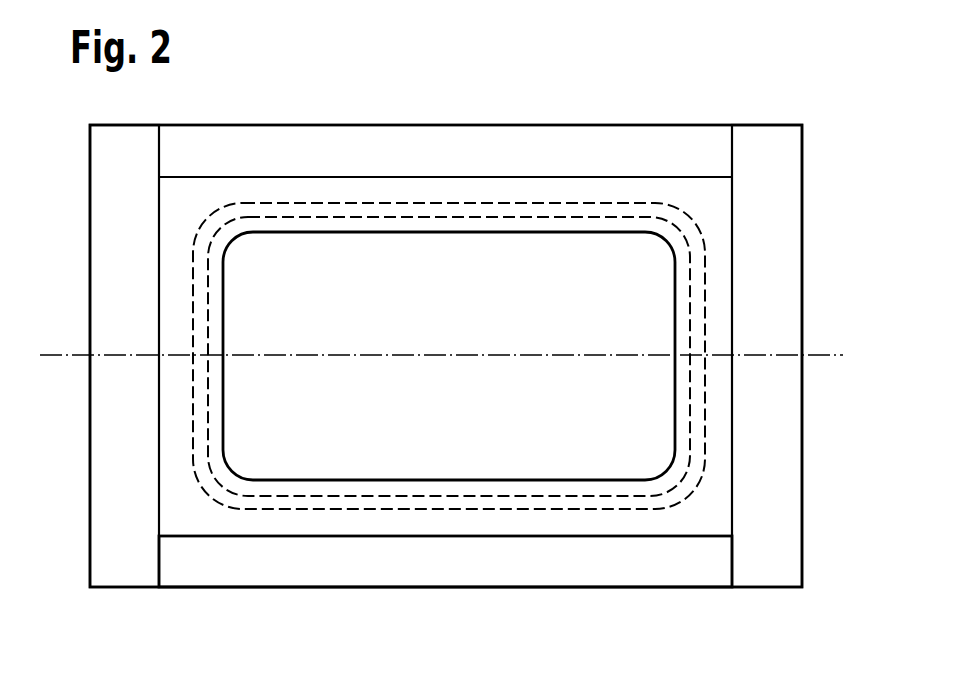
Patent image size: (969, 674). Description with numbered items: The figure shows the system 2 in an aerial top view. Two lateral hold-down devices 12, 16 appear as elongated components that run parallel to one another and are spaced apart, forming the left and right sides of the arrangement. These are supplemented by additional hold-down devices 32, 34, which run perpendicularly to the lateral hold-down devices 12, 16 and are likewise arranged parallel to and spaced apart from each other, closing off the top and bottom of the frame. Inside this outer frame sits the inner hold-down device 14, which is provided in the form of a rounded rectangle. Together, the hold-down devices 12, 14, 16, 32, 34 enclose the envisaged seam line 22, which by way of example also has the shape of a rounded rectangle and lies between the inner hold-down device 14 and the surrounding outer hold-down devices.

The system 2 is at (752, 78).
The lateral hold-down device 12 is at (113, 271).
The inner hold-down device 14 is at (461, 309).
The lateral hold-down device 16 is at (778, 452).
The seam line 22 is at (505, 200).
The additional hold-down device 32 is at (239, 143).
The additional hold-down device 34 is at (647, 565).